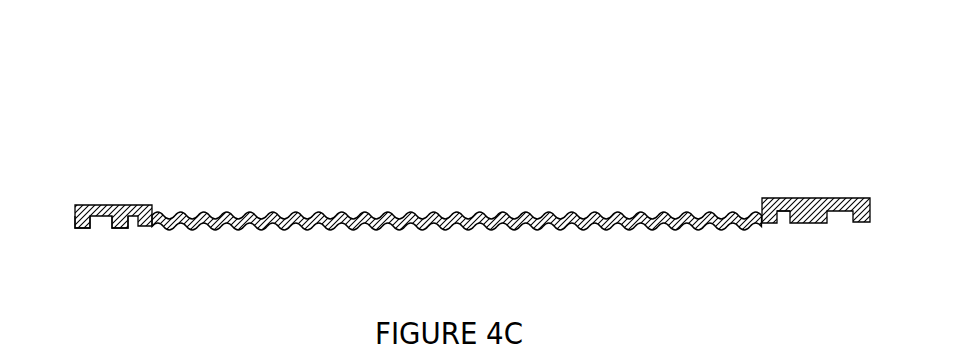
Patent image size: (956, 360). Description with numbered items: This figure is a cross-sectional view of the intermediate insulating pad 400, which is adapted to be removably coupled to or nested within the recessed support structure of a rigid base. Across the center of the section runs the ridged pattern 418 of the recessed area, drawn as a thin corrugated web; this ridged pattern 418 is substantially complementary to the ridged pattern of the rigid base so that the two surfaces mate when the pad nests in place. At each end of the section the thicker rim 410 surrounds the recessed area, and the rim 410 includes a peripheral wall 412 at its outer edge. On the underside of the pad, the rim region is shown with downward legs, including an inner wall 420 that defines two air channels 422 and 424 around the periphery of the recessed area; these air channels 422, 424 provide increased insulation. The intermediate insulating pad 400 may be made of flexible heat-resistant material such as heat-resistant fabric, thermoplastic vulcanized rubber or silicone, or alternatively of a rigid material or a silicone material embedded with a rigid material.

The intermediate insulating pad 400 is at (167, 70).
The rim 410 is at (117, 205).
The peripheral wall 412 is at (75, 214).
The inner wall 420 is at (119, 228).
The ridged pattern 418 is at (563, 217).
The air channel 422 is at (843, 226).
The air channel 424 is at (782, 230).